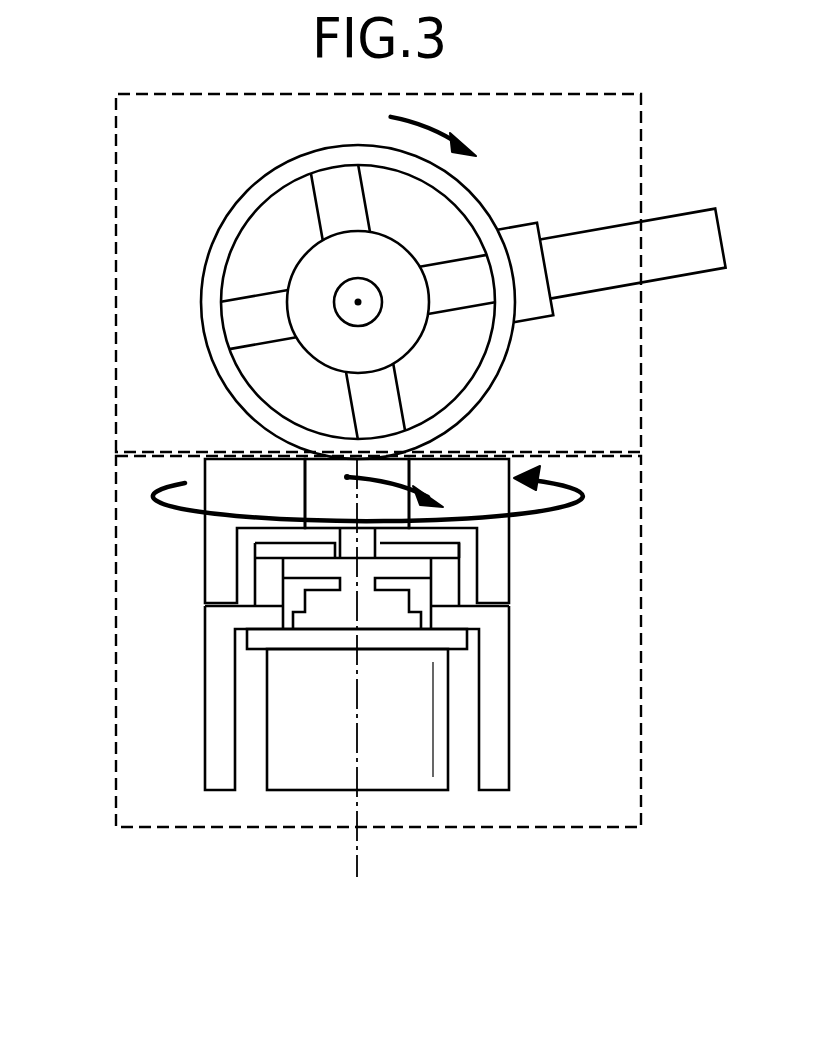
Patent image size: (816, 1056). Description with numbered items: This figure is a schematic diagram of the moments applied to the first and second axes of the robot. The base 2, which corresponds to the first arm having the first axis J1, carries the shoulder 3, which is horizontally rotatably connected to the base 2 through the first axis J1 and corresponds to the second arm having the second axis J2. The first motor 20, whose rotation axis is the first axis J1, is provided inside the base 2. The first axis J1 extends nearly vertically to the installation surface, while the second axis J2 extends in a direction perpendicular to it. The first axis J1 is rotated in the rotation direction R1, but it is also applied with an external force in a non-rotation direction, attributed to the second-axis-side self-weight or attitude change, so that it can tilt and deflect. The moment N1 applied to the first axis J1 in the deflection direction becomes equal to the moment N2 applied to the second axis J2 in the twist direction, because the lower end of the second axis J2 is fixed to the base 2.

The base 2 is at (116, 615).
The shoulder 3 is at (116, 255).
The first motor 20 is at (292, 791).
The first axis J1 is at (354, 686).
The second axis J2 is at (358, 302).
The moment applied to the first axis N1 is at (413, 487).
The moment applied to the second axis N2 is at (452, 153).
The rotation direction R1 is at (386, 493).